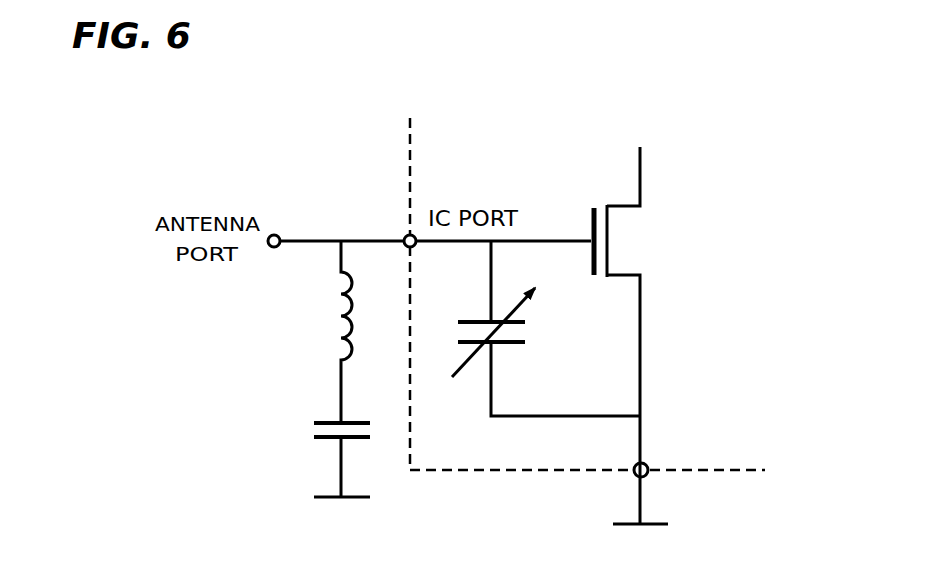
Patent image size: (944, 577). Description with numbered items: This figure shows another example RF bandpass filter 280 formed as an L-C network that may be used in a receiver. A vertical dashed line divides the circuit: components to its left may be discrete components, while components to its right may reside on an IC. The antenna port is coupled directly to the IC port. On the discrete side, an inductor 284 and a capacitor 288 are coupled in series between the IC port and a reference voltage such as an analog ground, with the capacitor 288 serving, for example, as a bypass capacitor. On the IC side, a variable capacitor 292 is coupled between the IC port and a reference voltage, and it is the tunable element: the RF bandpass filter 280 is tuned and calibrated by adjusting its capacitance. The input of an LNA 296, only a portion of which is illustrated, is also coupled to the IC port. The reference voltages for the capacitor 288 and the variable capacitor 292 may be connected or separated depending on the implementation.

The RF bandpass filter 280 is at (386, 112).
The inductor 284 is at (329, 322).
The capacitor 288 is at (302, 448).
The variable capacitor 292 is at (503, 348).
The LNA 296 is at (668, 226).